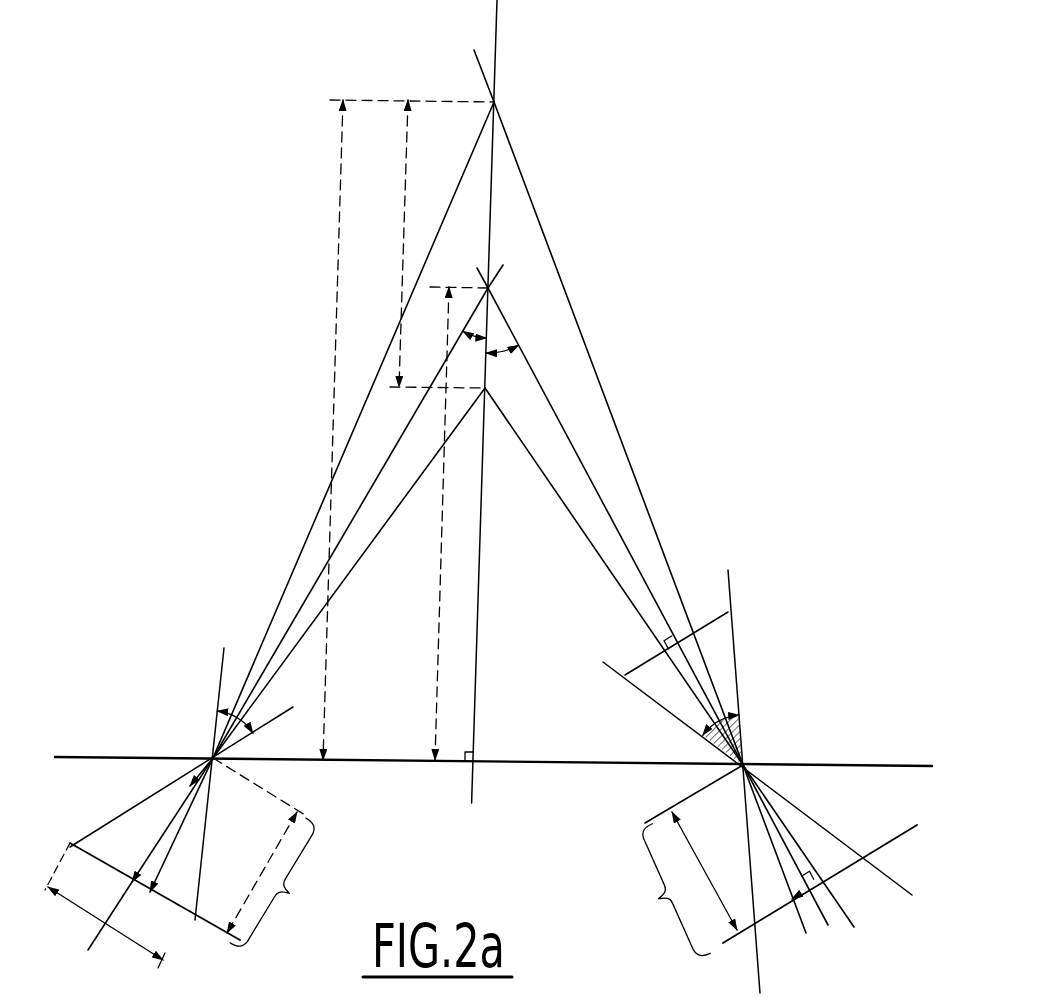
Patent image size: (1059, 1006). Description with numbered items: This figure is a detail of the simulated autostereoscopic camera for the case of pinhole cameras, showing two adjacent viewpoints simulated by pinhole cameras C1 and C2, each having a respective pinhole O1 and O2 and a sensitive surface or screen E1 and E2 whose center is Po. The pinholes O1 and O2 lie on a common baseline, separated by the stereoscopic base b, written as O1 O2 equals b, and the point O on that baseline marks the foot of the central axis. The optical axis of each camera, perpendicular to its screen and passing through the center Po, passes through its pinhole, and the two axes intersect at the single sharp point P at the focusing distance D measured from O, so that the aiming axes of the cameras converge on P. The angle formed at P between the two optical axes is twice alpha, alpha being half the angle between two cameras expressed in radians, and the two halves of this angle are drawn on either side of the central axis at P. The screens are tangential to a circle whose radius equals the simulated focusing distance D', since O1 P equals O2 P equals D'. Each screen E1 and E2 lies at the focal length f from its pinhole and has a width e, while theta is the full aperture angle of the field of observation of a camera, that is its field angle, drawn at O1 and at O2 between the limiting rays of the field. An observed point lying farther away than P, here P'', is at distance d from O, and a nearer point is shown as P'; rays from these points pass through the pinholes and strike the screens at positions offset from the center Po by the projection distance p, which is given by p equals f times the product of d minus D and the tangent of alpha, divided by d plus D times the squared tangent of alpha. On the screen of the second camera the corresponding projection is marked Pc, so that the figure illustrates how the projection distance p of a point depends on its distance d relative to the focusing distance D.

The far observed point P'' is at (427, 90).
The convergence point P is at (470, 286).
The near observed point P' is at (437, 412).
The half convergence angle alpha is at (490, 356).
The distance from observed point to point O d is at (324, 430).
The focusing distance D is at (436, 523).
The simulated focusing distance D' is at (256, 258).
The baseline point O is at (484, 401).
The first pinhole O1 is at (181, 784).
The second pinhole O2 is at (757, 781).
The field angle theta is at (748, 717).
The focal length f is at (478, 845).
The first simulated pinhole camera C1 is at (198, 887).
The second simulated pinhole camera C2 is at (768, 894).
The projection screen width e is at (105, 905).
The screen center Po is at (127, 882).
The projection distance p is at (812, 935).
The corresponding projection point Pc is at (827, 878).
The first screen E1 is at (194, 940).
The second screen E2 is at (745, 940).
The stereoscopic base b is at (493, 781).